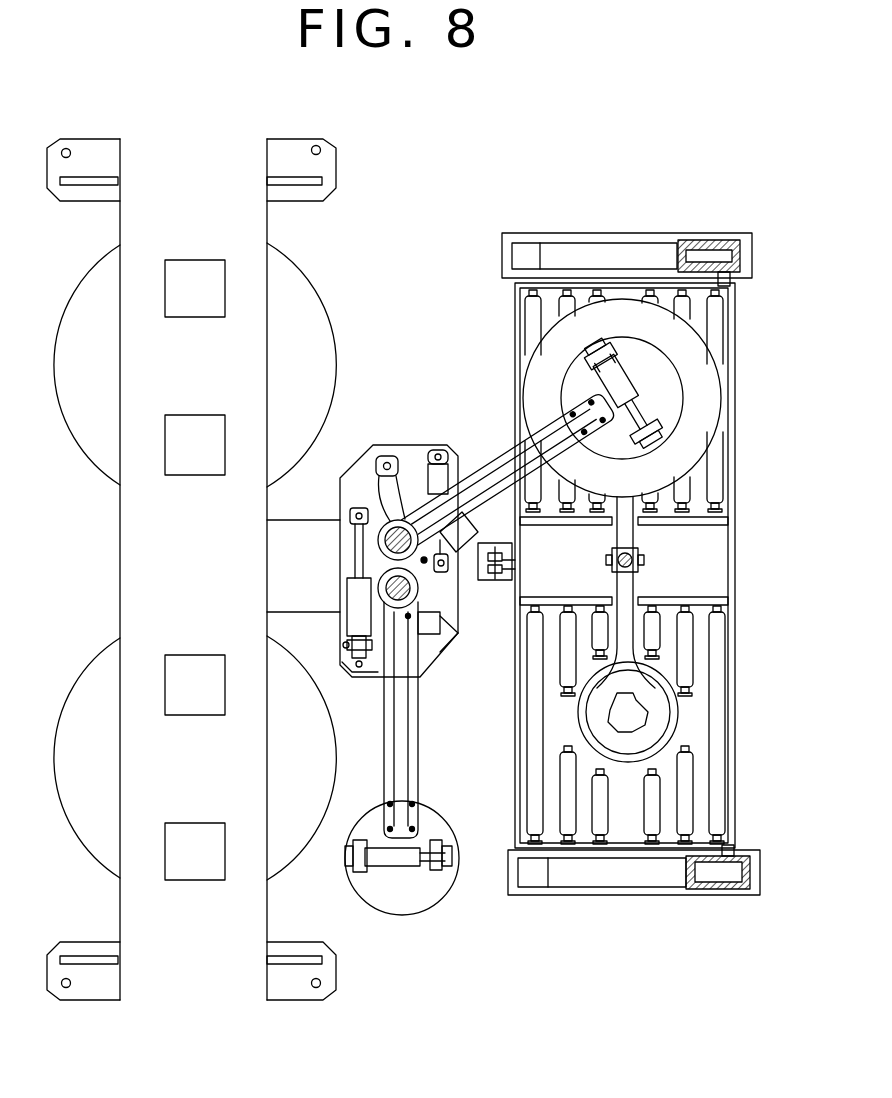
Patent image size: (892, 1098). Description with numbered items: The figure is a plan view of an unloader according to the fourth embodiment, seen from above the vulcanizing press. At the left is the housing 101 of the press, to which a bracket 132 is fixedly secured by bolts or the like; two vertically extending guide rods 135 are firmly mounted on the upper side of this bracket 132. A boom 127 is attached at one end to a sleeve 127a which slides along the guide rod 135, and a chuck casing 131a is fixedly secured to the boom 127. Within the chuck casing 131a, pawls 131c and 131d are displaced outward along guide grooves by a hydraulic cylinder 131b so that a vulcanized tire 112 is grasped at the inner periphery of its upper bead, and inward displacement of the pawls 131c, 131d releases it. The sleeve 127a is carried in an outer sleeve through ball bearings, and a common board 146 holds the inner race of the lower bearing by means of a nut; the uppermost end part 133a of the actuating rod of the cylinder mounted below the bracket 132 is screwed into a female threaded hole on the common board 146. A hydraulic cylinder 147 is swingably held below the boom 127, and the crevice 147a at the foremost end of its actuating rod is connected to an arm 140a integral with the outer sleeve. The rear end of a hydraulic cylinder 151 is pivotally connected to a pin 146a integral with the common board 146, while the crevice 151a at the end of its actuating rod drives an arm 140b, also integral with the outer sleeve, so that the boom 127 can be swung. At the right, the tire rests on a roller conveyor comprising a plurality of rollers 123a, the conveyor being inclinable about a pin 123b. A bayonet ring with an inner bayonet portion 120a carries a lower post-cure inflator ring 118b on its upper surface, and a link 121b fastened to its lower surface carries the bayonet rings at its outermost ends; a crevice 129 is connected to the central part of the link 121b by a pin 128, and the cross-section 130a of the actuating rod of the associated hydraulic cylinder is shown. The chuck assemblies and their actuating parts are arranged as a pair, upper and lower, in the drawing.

The housing 101 is at (120, 617).
The vulcanized tire 112 is at (518, 386).
The lower post-cure inflator ring 118b is at (675, 722).
The bayonet portion 120a is at (613, 710).
The link 121b is at (634, 538).
The rollers 123a is at (567, 788).
The pin 123b is at (728, 882).
The boom 127 is at (498, 458).
The sleeve 127a is at (352, 488).
The pin 128 is at (642, 565).
The crevice 129 is at (612, 553).
The actuating rod of hydraulic cylinder 130a is at (612, 568).
The chuck casing 131a is at (676, 388).
The hydraulic cylinder 131b is at (628, 406).
The pawl 131c is at (633, 440).
The pawl 131d is at (620, 342).
The bracket 132 is at (285, 519).
The uppermost end part of actuating rod 133a is at (441, 574).
The guide rods 135 is at (382, 556).
The arm 140a is at (378, 590).
The arm 140b is at (378, 537).
The common board 146 is at (443, 624).
The pin 146a is at (365, 676).
The hydraulic cylinder 147 is at (455, 532).
The crevice 147a is at (390, 460).
The hydraulic cylinder 151 is at (437, 452).
The crevice 151a is at (355, 512).